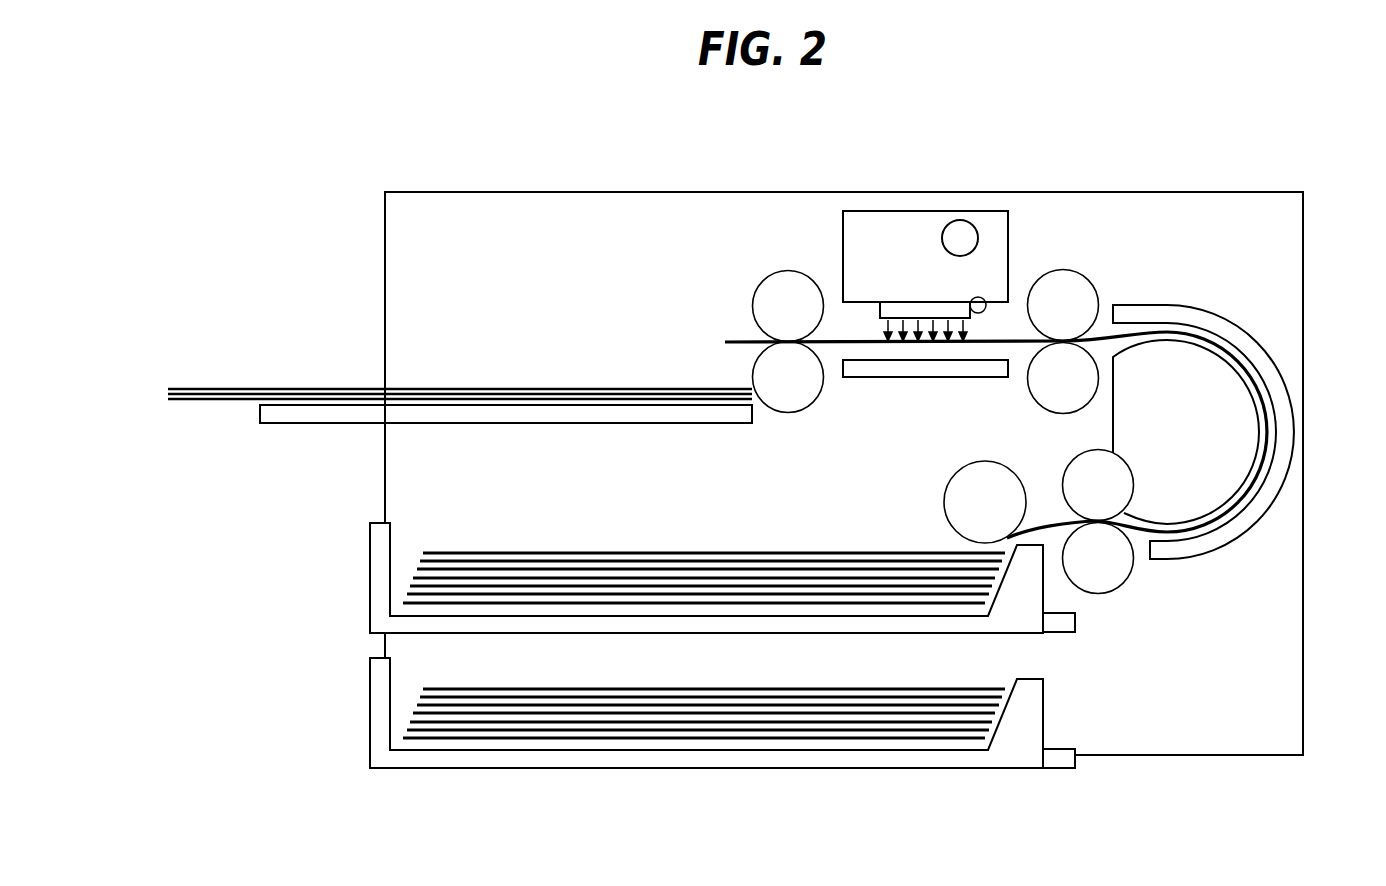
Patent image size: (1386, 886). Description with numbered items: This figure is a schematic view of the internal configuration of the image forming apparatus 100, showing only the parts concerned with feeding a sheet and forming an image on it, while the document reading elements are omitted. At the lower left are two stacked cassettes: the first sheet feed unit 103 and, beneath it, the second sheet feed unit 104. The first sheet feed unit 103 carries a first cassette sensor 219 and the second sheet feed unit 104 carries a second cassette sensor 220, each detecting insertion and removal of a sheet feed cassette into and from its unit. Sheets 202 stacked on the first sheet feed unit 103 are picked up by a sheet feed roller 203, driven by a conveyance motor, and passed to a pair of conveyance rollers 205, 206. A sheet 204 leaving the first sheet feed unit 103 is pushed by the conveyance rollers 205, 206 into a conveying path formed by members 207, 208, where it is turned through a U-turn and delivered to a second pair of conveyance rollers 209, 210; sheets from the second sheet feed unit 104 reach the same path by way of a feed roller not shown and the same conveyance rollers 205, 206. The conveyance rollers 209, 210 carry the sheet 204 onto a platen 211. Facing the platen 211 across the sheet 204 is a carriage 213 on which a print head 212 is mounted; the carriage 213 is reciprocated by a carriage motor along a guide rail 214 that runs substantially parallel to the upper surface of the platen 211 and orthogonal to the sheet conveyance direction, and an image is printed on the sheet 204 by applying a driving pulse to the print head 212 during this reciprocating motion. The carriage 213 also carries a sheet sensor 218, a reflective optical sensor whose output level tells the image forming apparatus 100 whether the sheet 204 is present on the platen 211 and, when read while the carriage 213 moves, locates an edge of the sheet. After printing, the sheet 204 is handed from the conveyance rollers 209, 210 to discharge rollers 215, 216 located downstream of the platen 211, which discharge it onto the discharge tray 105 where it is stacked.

The image forming apparatus 100 is at (1226, 192).
The first sheet feed unit 103 is at (370, 572).
The second sheet feed unit 104 is at (370, 692).
The discharge tray 105 is at (296, 425).
The sheets 202 is at (662, 553).
The sheet feed roller 203 is at (945, 505).
The sheet 204 is at (1268, 456).
The conveyance roller 205 is at (1116, 592).
The conveyance roller 206 is at (1075, 468).
The member 207 is at (1282, 438).
The member 208 is at (1240, 420).
The conveyance roller 209 is at (1042, 392).
The conveyance roller 210 is at (1086, 290).
The platen 211 is at (884, 368).
The print head 212 is at (894, 308).
The carriage 213 is at (864, 218).
The guide rail 214 is at (958, 220).
The discharge roller 215 is at (788, 404).
The discharge roller 216 is at (762, 301).
The sheet sensor 218 is at (978, 300).
The first cassette sensor 219 is at (1060, 632).
The second cassette sensor 220 is at (1060, 768).